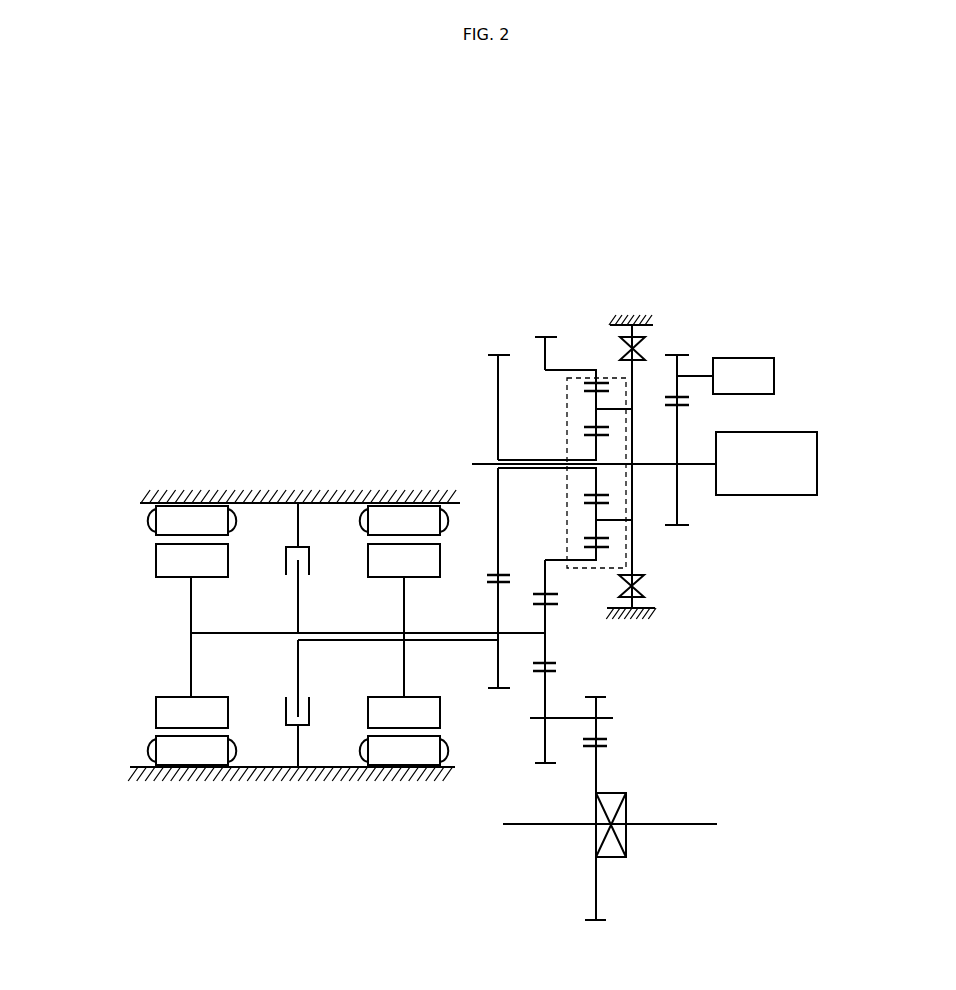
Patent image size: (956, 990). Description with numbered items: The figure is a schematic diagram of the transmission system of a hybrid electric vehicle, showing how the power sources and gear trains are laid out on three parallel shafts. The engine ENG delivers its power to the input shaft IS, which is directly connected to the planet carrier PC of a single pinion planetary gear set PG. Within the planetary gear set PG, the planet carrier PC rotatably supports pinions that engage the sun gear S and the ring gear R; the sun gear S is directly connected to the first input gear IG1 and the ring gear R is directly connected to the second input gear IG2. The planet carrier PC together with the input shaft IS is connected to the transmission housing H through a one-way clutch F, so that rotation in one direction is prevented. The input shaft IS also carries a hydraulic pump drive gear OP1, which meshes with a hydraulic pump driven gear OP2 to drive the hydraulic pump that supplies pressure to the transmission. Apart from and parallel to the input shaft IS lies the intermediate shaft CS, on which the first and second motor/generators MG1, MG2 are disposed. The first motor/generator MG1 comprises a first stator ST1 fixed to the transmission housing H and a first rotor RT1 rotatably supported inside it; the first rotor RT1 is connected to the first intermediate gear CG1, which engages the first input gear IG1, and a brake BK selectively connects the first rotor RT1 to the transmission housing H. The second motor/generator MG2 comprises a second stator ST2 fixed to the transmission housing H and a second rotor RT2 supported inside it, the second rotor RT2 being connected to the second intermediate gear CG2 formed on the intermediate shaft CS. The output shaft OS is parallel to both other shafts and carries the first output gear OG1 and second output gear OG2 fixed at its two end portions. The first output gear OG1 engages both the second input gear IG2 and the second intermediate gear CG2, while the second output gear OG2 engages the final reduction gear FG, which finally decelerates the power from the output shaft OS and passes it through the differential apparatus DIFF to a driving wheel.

The transmission housing H is at (323, 490).
The first motor/generator MG1 is at (380, 635).
The second motor/generator MG2 is at (145, 635).
The first stator ST1 is at (404, 635).
The first rotor RT1 is at (404, 636).
The second stator ST2 is at (192, 635).
The second rotor RT2 is at (192, 636).
The brake BK is at (282, 563).
The intermediate shaft CS is at (236, 638).
The first input gear IG1 is at (498, 370).
The second input gear IG2 is at (544, 353).
The planetary gear set PG is at (565, 485).
The ring gear R is at (587, 383).
The planet carrier PC is at (600, 413).
The sun gear S is at (587, 434).
The one-way clutch F is at (645, 371).
The input shaft IS is at (655, 466).
The engine ENG is at (766, 463).
The hydraulic pump drive gear OP1 is at (678, 423).
The hydraulic pump driven gear OP2 is at (678, 368).
The first intermediate gear CG1 is at (498, 608).
The second intermediate gear CG2 is at (548, 654).
The output shaft OS is at (535, 723).
The first output gear OG1 is at (547, 680).
The second output gear OG2 is at (597, 705).
The final reduction gear FG is at (597, 770).
The differential apparatus DIFF is at (627, 808).